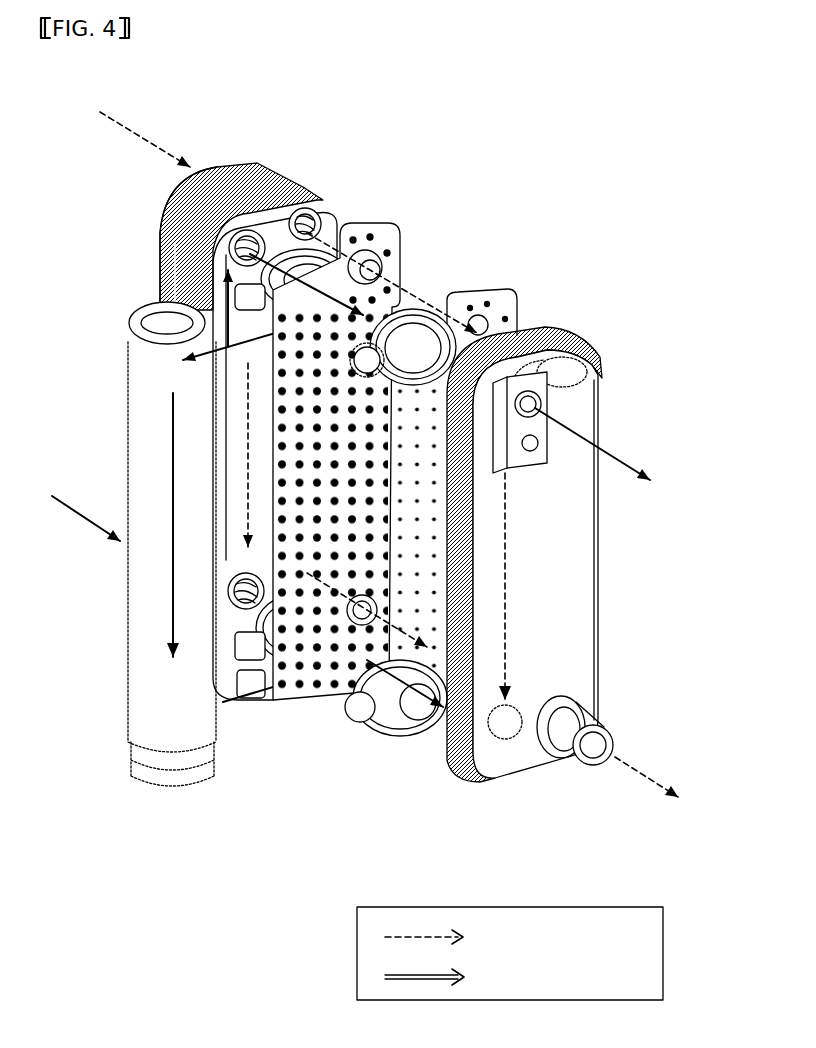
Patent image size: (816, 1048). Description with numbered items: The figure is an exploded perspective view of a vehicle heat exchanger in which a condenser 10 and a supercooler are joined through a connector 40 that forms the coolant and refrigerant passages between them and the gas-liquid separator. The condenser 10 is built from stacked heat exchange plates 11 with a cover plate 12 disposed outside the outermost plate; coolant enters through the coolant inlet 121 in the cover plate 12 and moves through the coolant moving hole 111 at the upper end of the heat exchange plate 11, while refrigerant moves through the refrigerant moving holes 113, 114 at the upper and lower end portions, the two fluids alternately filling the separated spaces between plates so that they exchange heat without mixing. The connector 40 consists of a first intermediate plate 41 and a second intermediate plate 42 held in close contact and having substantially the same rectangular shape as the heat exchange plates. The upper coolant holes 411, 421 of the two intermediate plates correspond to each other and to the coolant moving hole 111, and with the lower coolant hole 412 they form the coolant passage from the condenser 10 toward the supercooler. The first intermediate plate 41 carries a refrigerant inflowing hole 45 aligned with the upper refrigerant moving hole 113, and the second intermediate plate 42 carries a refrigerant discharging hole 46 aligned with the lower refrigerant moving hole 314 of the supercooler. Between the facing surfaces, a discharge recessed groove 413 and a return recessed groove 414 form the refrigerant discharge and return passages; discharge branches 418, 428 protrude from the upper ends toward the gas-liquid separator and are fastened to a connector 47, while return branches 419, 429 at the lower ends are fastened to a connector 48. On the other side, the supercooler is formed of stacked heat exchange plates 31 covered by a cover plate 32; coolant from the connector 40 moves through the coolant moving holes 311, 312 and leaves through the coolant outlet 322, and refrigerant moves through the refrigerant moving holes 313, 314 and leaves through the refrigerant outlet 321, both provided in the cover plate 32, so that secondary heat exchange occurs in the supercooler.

The condenser 10 is at (292, 150).
The heat exchange plate 11 is at (300, 178).
The cover plate 12 is at (250, 163).
The coolant inlet 121 is at (207, 166).
The refrigerant moving hole 113 is at (157, 240).
The coolant moving hole 111 is at (319, 212).
The refrigerant moving hole 114 is at (230, 584).
The refrigerant inflowing hole 45 is at (338, 247).
The discharge branch 418 is at (158, 297).
The discharge recessed groove 413 is at (137, 322).
The connector 47 is at (245, 382).
The discharge branch 428 is at (270, 440).
The return branch 419 is at (233, 645).
The coolant hole 412 is at (302, 650).
The return recessed groove 414 is at (255, 670).
The connector 48 is at (260, 705).
The connector 40 is at (560, 240).
The first intermediate plate 41 is at (387, 240).
The coolant hole 411 is at (398, 262).
The return branch 429 is at (362, 630).
The refrigerant discharging hole 46 is at (420, 747).
The second intermediate plate 42 is at (508, 312).
The coolant hole 421 is at (505, 328).
The heat exchange plate 31 is at (463, 767).
The cover plate 32 is at (572, 585).
The coolant moving hole 311 is at (515, 375).
The refrigerant moving hole 313 is at (568, 335).
The refrigerant outlet 321 is at (540, 395).
The refrigerant moving hole 314 is at (508, 740).
The coolant moving hole 312 is at (552, 700).
The coolant outlet 322 is at (600, 765).